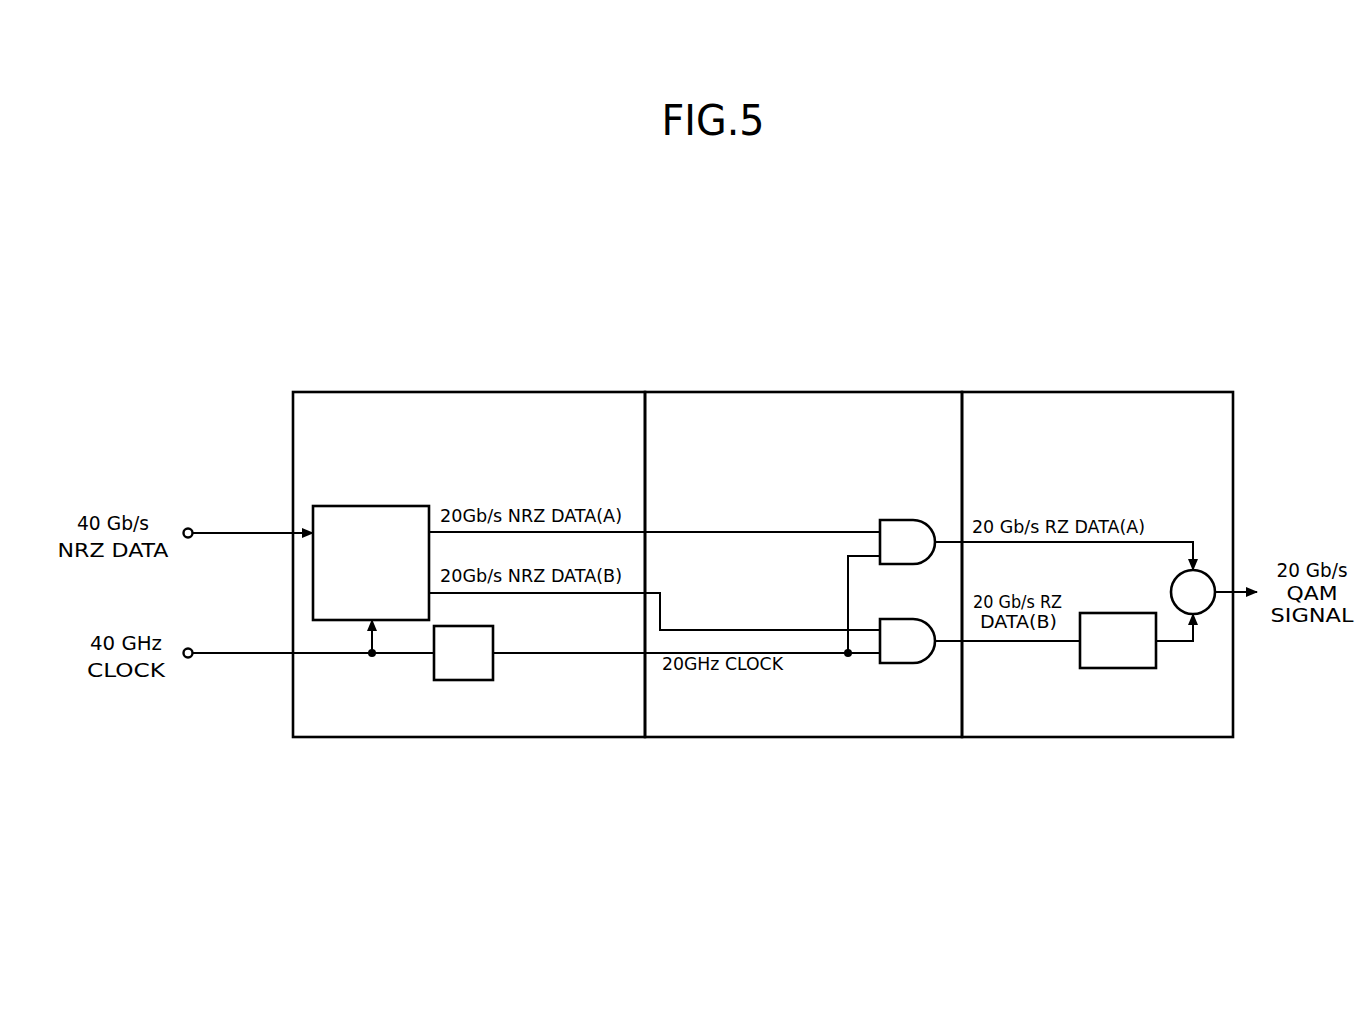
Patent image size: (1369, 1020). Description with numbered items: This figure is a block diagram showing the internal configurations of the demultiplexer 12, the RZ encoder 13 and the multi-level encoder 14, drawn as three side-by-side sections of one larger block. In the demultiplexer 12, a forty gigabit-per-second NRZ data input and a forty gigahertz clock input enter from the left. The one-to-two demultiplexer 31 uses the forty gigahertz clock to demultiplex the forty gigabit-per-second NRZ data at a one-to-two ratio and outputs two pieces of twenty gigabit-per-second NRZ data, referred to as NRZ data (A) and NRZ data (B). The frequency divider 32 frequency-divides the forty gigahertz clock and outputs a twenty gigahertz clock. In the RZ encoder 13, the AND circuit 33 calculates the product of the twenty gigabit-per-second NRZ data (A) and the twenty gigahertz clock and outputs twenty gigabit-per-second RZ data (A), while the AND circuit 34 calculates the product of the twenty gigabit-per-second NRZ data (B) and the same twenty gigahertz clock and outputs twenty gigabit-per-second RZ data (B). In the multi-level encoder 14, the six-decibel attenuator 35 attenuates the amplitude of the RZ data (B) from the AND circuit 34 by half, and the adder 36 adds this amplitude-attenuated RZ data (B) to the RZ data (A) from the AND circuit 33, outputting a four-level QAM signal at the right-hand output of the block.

The demultiplexer 12 is at (451, 372).
The RZ encoder 13 is at (776, 378).
The multi-level encoder 14 is at (1097, 373).
The 1:2 demultiplexer 31 is at (346, 502).
The frequency divider 32 is at (465, 683).
The AND circuit 33 is at (903, 517).
The AND circuit 34 is at (898, 667).
The 6 dB attenuator 35 is at (1115, 671).
The adder 36 is at (1205, 568).